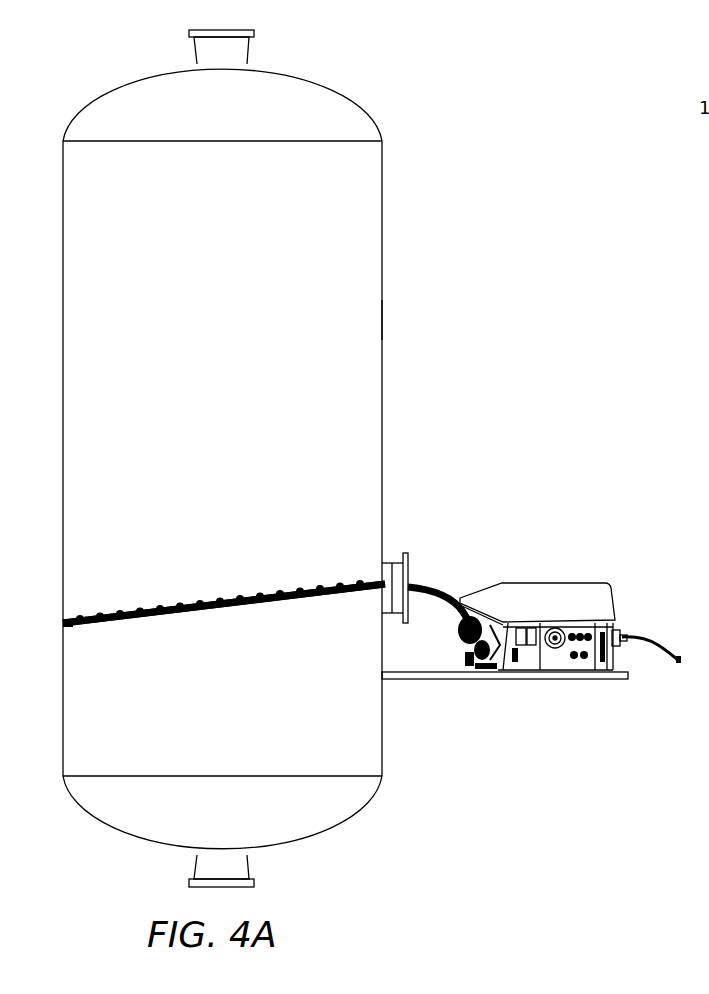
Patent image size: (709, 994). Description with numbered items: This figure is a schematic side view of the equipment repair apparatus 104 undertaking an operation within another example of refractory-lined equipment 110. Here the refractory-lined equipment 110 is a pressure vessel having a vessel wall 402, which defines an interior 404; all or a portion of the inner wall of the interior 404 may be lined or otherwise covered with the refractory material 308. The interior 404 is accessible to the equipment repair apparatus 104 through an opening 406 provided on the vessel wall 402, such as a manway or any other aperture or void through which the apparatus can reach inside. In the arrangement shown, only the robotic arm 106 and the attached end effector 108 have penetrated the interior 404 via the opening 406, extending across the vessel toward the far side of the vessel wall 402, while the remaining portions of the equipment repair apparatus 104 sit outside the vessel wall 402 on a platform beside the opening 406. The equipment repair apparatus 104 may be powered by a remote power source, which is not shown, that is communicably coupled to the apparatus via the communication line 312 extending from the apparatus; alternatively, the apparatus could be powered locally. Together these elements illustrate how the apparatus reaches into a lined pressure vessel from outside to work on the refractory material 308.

The refractory-lined equipment 110 is at (476, 148).
The vessel wall 402 is at (382, 266).
The interior 404 is at (240, 308).
The refractory material 308 is at (382, 336).
The opening 406 is at (406, 552).
The robotic arm 106 is at (272, 586).
The end effector 108 is at (67, 634).
The equipment repair apparatus 104 is at (453, 656).
The communication line 312 is at (656, 642).